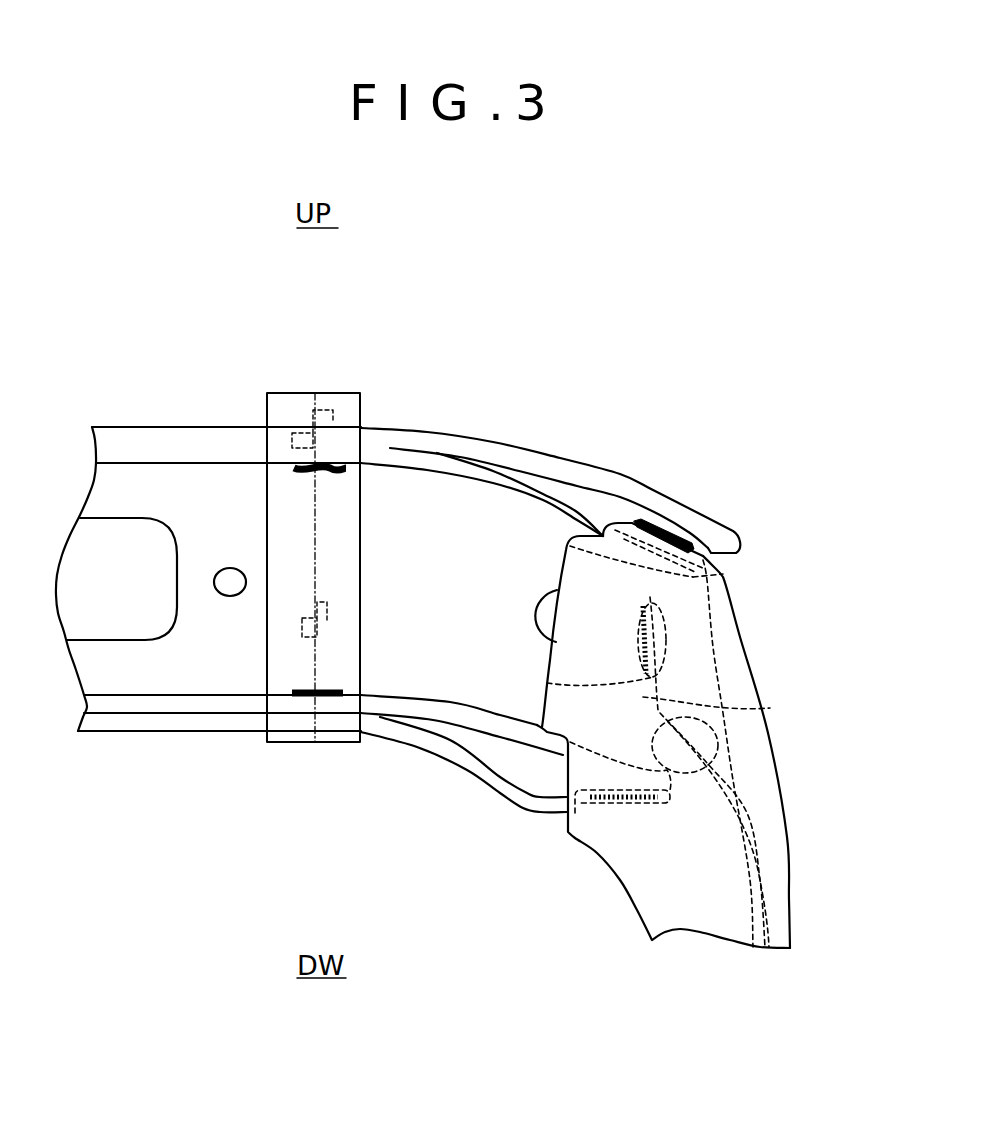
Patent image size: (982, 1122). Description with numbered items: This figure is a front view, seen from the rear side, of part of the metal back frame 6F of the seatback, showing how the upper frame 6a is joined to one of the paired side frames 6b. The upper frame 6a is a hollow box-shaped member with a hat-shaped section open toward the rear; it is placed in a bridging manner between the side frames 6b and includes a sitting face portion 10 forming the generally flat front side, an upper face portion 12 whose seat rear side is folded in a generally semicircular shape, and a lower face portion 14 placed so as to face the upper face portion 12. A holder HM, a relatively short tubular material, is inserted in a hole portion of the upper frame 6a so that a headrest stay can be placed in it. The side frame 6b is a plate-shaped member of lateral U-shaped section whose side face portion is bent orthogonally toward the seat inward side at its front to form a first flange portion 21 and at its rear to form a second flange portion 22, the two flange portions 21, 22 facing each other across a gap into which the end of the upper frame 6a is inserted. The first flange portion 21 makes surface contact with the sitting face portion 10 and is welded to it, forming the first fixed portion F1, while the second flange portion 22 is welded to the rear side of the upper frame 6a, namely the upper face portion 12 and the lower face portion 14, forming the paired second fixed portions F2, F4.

The back frame 6F is at (681, 370).
The upper frame 6a is at (153, 423).
The side frame 6b is at (797, 881).
The holder HM is at (329, 393).
The sitting face portion 10 is at (467, 543).
The upper face portion 12 is at (573, 495).
The lower face portion 14 is at (517, 763).
The first flange portion 21 is at (643, 697).
The second flange portion 22 is at (557, 592).
The first fixed portion F1 is at (657, 635).
The second fixed portion F2 is at (665, 537).
The second fixed portion F4 is at (623, 807).